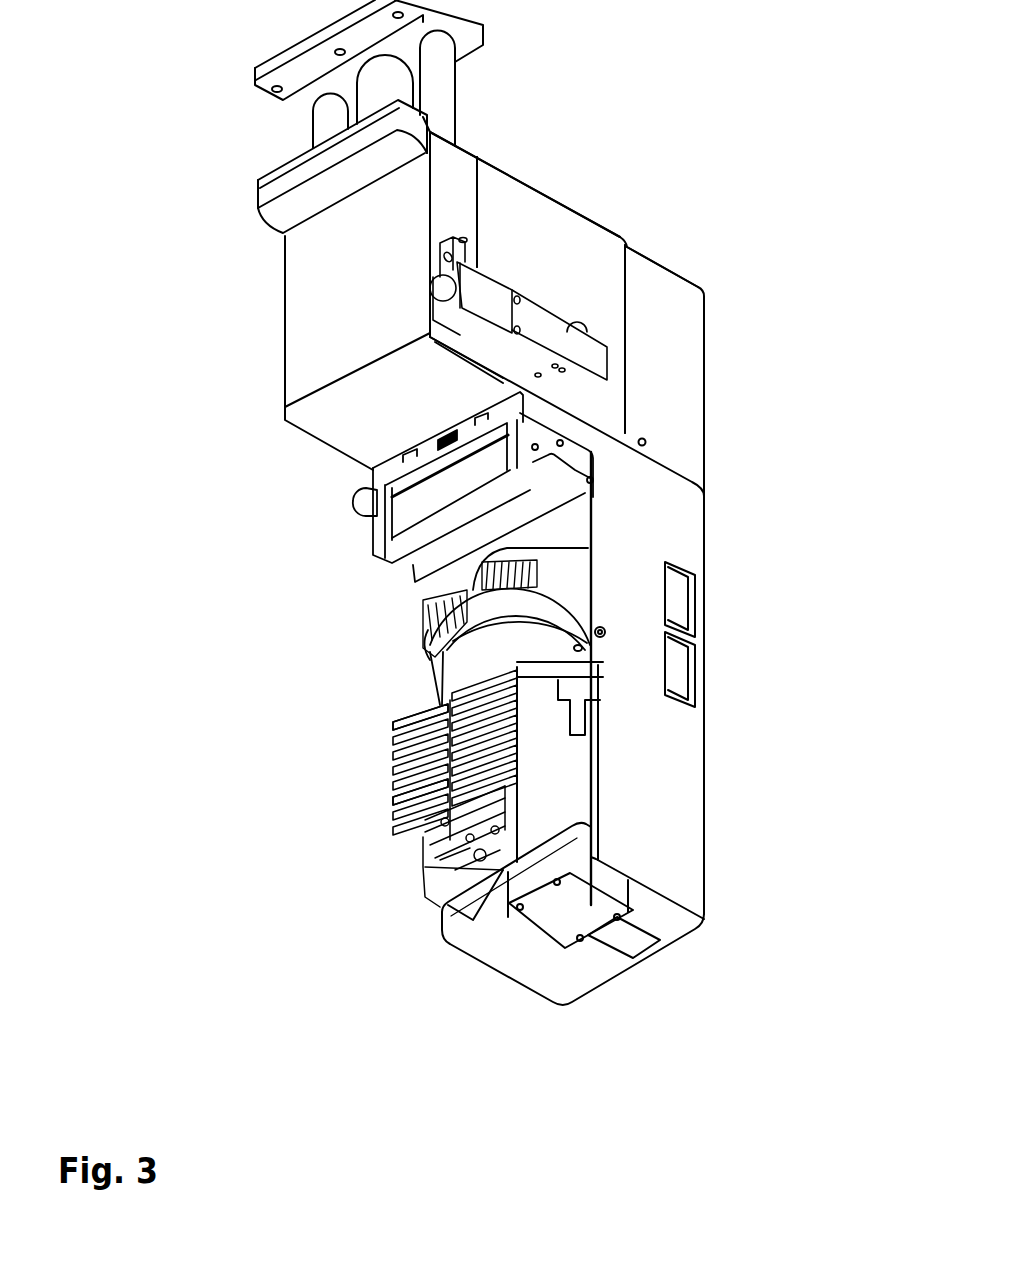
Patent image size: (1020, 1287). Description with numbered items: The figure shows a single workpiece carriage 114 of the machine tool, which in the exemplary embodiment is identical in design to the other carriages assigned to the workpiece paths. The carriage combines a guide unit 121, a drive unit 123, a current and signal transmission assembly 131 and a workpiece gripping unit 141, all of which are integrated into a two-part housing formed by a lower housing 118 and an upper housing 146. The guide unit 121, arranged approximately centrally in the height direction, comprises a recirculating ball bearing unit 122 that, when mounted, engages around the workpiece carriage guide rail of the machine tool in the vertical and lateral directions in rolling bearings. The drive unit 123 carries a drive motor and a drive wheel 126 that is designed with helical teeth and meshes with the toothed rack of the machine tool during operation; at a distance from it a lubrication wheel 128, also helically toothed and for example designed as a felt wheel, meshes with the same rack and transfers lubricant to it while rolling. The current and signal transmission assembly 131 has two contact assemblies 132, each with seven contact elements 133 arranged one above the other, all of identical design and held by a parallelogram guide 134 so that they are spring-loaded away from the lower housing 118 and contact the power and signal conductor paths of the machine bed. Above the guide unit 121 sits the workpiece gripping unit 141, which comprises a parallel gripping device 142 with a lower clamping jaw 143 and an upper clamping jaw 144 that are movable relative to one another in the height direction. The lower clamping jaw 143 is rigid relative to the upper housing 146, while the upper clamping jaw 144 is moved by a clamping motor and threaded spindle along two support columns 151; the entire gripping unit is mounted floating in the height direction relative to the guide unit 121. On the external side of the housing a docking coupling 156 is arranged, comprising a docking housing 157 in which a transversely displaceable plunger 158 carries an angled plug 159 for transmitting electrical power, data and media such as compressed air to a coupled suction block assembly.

The workpiece carriage 114 is at (630, 232).
The lower housing 118 is at (659, 526).
The guide unit 121 is at (335, 516).
The recirculating ball bearing unit 122 is at (448, 491).
The drive unit 123 is at (400, 635).
The drive wheel 126 is at (530, 572).
The lubrication wheel 128 is at (422, 609).
The current and signal transmission assembly 131 is at (376, 750).
The contact assembly 132 is at (396, 803).
The contact element 133 is at (405, 722).
The parallelogram guide 134 is at (423, 861).
The workpiece gripping unit 141 is at (282, 133).
The parallel gripping device 142 is at (468, 117).
The lower clamping jaw 143 is at (277, 187).
The upper clamping jaw 144 is at (288, 55).
The upper housing 146 is at (662, 344).
The support column 151 is at (437, 78).
The docking coupling 156 is at (545, 303).
The docking housing 157 is at (572, 363).
The plunger 158 is at (442, 289).
The plug 159 is at (447, 255).